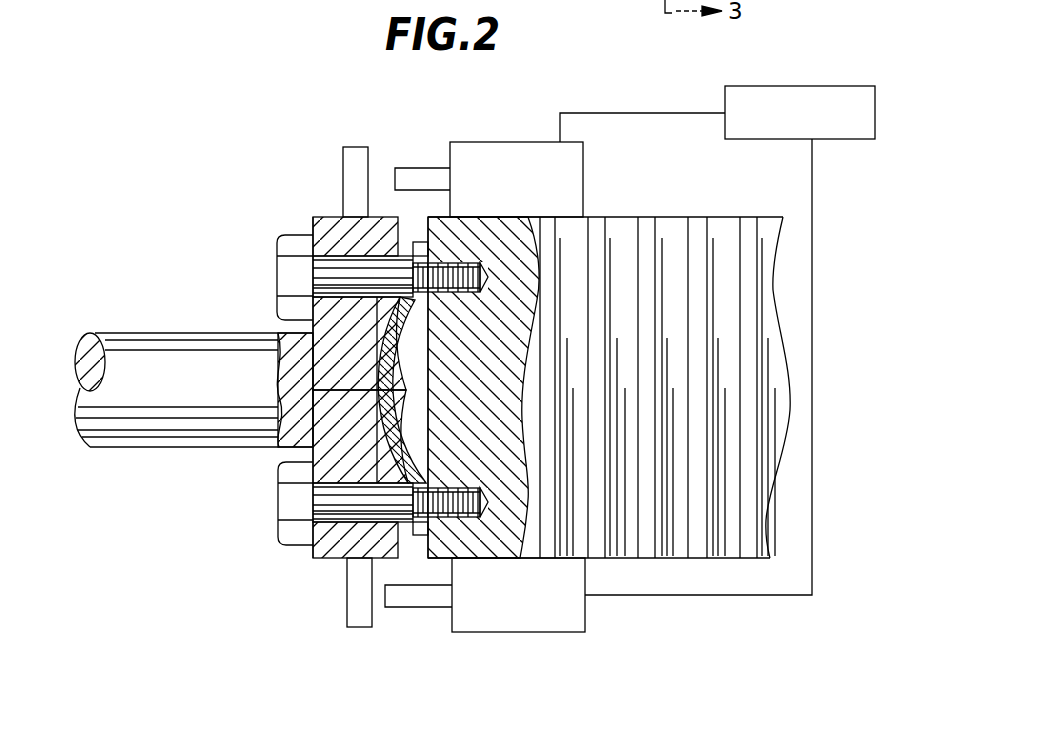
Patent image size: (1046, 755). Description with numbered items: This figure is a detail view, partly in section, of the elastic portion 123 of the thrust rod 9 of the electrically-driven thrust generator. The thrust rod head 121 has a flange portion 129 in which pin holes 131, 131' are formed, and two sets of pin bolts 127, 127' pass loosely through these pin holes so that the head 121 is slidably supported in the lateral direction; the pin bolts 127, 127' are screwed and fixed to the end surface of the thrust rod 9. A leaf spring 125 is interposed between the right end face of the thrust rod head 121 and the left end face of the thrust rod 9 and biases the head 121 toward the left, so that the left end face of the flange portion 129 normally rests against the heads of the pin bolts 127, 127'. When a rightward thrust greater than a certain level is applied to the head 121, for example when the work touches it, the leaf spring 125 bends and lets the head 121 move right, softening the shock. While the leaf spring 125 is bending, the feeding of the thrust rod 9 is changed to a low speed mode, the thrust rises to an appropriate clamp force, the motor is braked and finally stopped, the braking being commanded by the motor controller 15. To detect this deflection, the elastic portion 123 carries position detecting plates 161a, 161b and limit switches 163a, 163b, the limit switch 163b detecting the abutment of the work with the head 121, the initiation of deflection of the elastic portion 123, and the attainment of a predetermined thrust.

The thrust rod 9 is at (569, 217).
The motor controller 15 is at (815, 86).
The thrust rod head 121 is at (140, 358).
The elastic portion 123 is at (325, 192).
The leaf spring 125 is at (400, 298).
The pin bolt 127 is at (310, 282).
The pin bolt 127' is at (347, 505).
The flange portion 129 is at (387, 215).
The pin hole 131 is at (329, 277).
The pin hole 131' is at (333, 508).
The position detecting plate 161a is at (360, 617).
The position detecting plate 161b is at (367, 147).
The limit switch 163a is at (557, 632).
The limit switch 163b is at (540, 152).